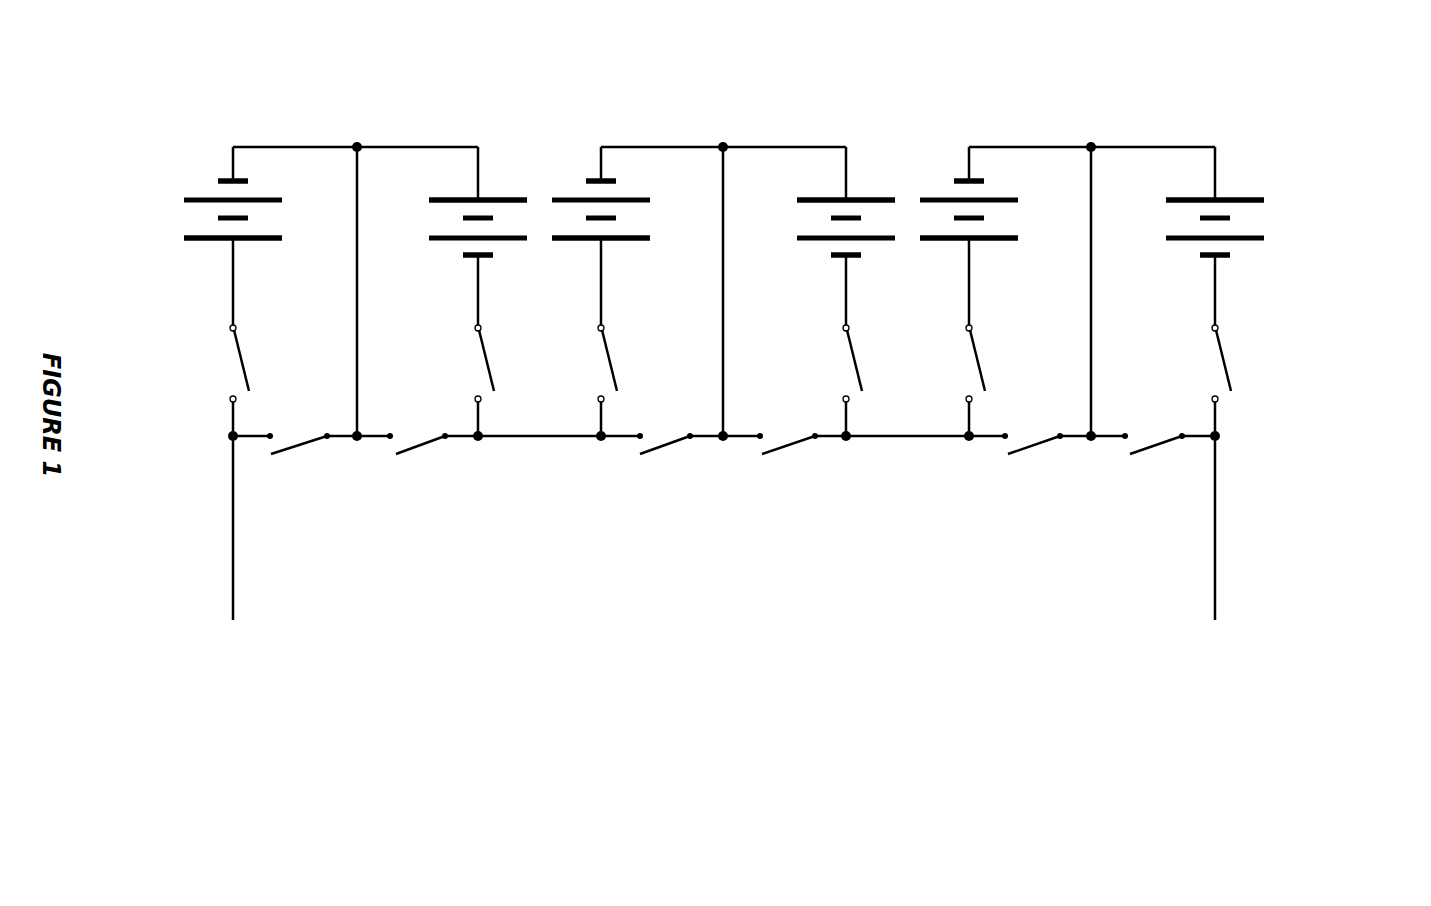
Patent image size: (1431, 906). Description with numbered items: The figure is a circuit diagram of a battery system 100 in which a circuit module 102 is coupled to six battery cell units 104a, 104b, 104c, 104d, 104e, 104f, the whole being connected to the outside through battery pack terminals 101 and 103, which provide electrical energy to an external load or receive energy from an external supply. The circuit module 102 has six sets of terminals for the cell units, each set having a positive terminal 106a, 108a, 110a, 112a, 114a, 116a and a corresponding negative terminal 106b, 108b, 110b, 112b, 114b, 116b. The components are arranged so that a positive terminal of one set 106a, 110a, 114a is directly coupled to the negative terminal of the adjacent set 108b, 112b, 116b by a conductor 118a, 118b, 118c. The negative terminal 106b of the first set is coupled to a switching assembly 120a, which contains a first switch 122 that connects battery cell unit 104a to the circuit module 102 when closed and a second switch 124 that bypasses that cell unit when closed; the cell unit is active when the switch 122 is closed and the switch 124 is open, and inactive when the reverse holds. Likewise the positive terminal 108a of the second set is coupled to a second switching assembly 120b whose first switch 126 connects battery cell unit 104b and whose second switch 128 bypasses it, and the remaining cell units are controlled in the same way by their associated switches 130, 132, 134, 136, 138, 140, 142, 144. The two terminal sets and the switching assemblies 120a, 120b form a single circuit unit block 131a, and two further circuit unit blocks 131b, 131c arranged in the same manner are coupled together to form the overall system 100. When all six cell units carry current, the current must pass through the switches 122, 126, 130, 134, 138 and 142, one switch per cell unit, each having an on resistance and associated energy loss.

The battery system 100 is at (1368, 725).
The battery pack terminal 101 is at (1214, 592).
The circuit module 102 is at (1343, 656).
The battery pack terminal 103 is at (230, 572).
The battery cell unit 104a is at (1263, 237).
The battery cell unit 104b is at (984, 219).
The battery cell unit 104c is at (830, 218).
The battery cell unit 104d is at (616, 219).
The battery cell unit 104e is at (458, 218).
The battery cell unit 104f is at (248, 219).
The positive terminal 106a is at (1215, 199).
The negative terminal 106b is at (1212, 257).
The positive terminal 108a is at (963, 239).
The negative terminal 108b is at (967, 180).
The positive terminal 110a is at (845, 199).
The negative terminal 110b is at (843, 256).
The positive terminal 112a is at (600, 239).
The negative terminal 112b is at (601, 180).
The positive terminal 114a is at (478, 199).
The negative terminal 114b is at (476, 256).
The positive terminal 116a is at (232, 239).
The negative terminal 116b is at (228, 181).
The conductor 118a is at (1065, 146).
The conductor 118b is at (697, 146).
The conductor 118c is at (320, 146).
The switching assembly 120a is at (1157, 540).
The switching assembly 120b is at (1035, 540).
The first switch 122 is at (1225, 360).
The second switch 124 is at (1155, 452).
The first switch 126 is at (979, 360).
The second switch 128 is at (1030, 452).
The switch 130 is at (856, 360).
The circuit unit block 131a is at (1090, 585).
The circuit unit block 131b is at (720, 590).
The circuit unit block 131c is at (349, 590).
The switch 132 is at (783, 451).
The switch 134 is at (611, 358).
The switch 136 is at (657, 450).
The switch 138 is at (488, 358).
The switch 140 is at (418, 450).
The switch 142 is at (243, 358).
The switch 144 is at (292, 450).